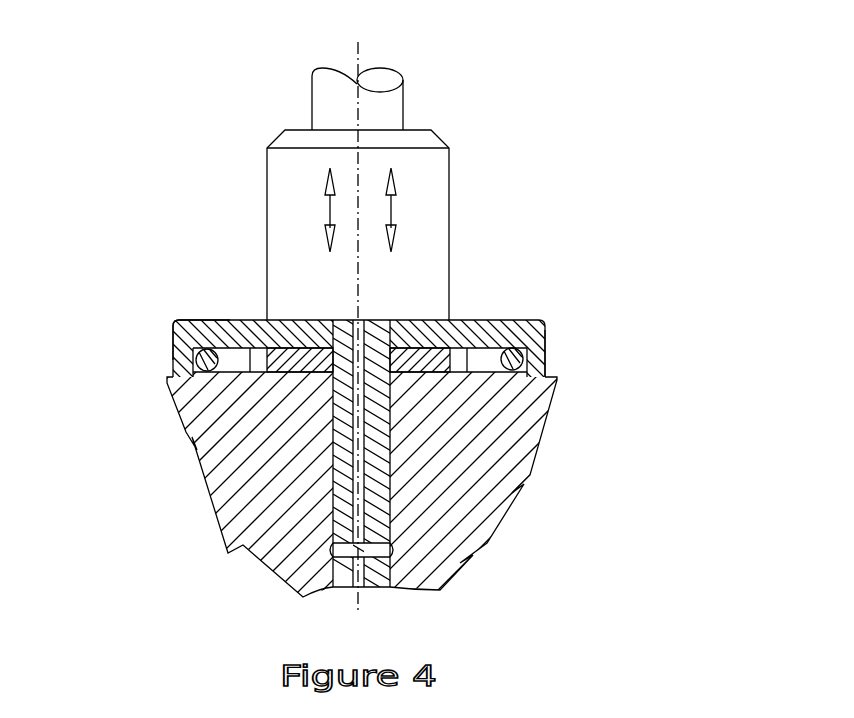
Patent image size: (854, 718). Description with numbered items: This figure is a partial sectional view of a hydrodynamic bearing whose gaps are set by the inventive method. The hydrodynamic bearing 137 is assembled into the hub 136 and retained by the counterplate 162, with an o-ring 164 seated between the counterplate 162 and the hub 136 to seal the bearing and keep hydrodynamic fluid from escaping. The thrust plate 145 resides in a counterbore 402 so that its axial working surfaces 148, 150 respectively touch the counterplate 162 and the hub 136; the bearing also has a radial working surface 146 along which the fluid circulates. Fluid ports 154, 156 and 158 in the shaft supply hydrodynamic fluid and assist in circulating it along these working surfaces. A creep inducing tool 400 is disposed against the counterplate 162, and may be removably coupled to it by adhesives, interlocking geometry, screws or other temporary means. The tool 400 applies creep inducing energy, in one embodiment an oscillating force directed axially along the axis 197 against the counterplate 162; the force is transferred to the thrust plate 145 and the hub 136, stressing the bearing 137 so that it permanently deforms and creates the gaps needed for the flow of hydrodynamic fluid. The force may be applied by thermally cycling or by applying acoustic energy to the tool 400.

The central axis 197 is at (362, 60).
The creep inducing tool 400 is at (428, 172).
The fluid port 158 is at (360, 347).
The thrust plate 145 is at (425, 336).
The axial working surface 148 is at (482, 330).
The counterplate 162 is at (221, 320).
The o-ring 164 is at (190, 354).
The hub 136 is at (185, 393).
The counterbore 402 is at (250, 385).
The axial working surface 150 is at (450, 372).
The hydrodynamic bearing 137 is at (317, 391).
The radial working surface 146 is at (330, 458).
The fluid port 154 is at (338, 548).
The fluid port 156 is at (392, 550).